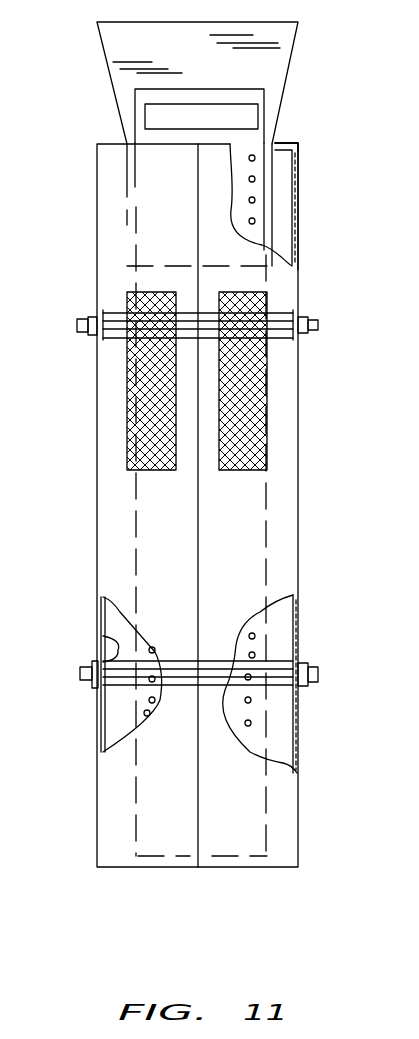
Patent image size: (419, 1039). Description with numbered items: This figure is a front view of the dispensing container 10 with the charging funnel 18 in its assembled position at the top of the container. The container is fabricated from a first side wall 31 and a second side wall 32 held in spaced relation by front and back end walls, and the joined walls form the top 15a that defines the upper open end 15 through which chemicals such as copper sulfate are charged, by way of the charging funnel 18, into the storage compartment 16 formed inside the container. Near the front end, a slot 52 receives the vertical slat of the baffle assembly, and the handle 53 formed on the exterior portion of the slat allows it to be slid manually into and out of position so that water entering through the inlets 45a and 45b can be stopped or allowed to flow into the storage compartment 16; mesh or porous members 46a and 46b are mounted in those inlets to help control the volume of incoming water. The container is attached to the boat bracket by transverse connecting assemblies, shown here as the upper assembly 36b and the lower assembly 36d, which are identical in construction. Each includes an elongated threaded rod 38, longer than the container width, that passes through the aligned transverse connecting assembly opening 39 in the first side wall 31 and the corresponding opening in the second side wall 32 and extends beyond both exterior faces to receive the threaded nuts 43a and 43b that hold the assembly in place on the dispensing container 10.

The dispensing container 10 is at (312, 277).
The charging funnel 18 is at (290, 39).
The slot 52 is at (257, 97).
The upper open end 15 is at (288, 148).
The top 15a is at (283, 141).
The handle 53 is at (242, 170).
The storage compartment 16 is at (295, 211).
The transverse connecting assembly 36b is at (299, 305).
The elongated threaded rod 38 is at (322, 325).
The inlet 45a is at (255, 375).
The inlet 45b is at (150, 346).
The mesh member 46a is at (267, 413).
The mesh member 46b is at (152, 410).
The first side wall 31 is at (100, 728).
The transverse connecting assembly opening 39 is at (104, 632).
The second side wall 32 is at (302, 613).
The transverse connecting assembly 36d is at (282, 652).
The threaded nut 43a is at (305, 666).
The threaded nut 43b is at (94, 686).